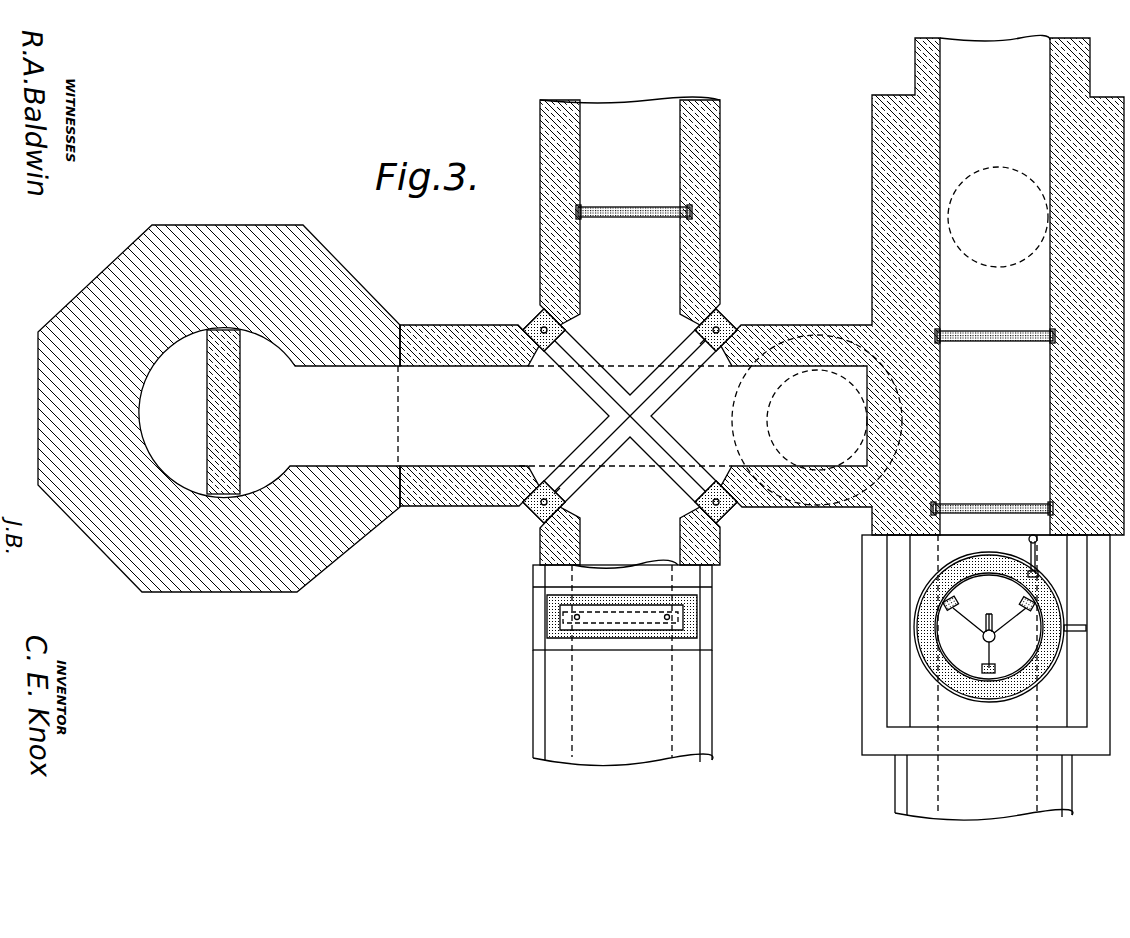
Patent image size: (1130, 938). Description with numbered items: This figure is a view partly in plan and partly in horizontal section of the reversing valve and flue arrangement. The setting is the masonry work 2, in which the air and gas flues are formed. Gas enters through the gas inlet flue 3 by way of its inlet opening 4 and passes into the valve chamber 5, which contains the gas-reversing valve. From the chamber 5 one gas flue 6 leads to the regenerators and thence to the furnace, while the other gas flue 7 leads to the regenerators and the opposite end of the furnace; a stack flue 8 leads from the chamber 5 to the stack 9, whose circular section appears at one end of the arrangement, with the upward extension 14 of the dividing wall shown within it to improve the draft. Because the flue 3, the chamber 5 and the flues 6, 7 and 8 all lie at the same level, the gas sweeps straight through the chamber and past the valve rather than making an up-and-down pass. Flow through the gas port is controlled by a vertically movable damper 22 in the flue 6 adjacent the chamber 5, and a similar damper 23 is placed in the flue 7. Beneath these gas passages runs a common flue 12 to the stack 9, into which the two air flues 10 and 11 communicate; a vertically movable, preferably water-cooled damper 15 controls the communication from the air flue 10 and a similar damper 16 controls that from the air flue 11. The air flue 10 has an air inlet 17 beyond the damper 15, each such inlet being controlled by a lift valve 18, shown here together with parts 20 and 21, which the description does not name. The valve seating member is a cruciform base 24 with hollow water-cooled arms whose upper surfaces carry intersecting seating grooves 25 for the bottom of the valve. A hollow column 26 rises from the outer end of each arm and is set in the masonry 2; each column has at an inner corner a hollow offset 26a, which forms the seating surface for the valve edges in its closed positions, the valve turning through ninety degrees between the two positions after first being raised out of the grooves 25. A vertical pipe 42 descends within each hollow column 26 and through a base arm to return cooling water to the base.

The masonry work 2 is at (476, 497).
The gas inlet flue 3 is at (807, 420).
The inlet opening 4 is at (797, 492).
The valve chamber 5 is at (694, 426).
The gas flue 6 is at (630, 211).
The gas flue 7 is at (630, 537).
The stack flue 8 is at (565, 416).
The stack 9 is at (219, 408).
The air flue 10 is at (1032, 285).
The air flue 11 is at (986, 665).
The common flue 12 is at (830, 286).
The upward extension of dividing wall 14 is at (214, 408).
The damper 15 is at (1005, 342).
The damper 16 is at (984, 505).
The air inlet 17 is at (998, 217).
The lift valve 18 is at (969, 634).
The casing ring 20 is at (993, 700).
The arm 21 is at (1010, 620).
The damper 22 is at (645, 203).
The damper 23 is at (642, 620).
The cruciform base 24 is at (590, 388).
The seating grooves 25 is at (593, 441).
The hollow column 26 is at (528, 328).
The hollow offset 26a is at (701, 340).
The vertical pipe 42 is at (541, 327).